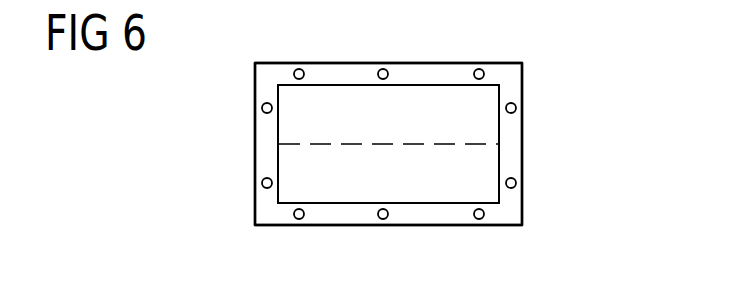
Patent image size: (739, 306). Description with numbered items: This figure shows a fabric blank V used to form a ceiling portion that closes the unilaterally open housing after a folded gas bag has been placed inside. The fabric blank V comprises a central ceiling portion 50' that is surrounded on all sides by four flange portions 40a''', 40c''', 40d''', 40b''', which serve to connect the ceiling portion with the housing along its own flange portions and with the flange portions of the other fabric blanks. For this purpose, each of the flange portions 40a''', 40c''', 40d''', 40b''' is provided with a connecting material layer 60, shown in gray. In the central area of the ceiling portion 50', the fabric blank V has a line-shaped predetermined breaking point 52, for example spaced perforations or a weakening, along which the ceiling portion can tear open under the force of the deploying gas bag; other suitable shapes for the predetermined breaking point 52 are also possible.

The connecting material layer 60 is at (442, 70).
The flange portion 40c''' is at (388, 44).
The flange portion 40d''' is at (223, 144).
The flange portion 40b''' is at (557, 144).
The flange portion 40a''' is at (388, 244).
The ceiling portion 50' is at (388, 144).
The predetermined breaking point 52 is at (415, 146).
The fabric blank V is at (538, 54).